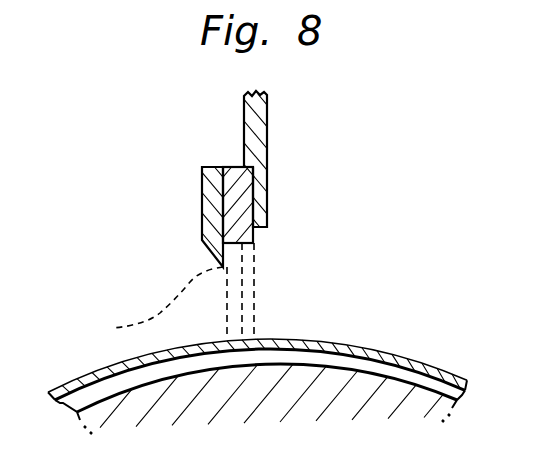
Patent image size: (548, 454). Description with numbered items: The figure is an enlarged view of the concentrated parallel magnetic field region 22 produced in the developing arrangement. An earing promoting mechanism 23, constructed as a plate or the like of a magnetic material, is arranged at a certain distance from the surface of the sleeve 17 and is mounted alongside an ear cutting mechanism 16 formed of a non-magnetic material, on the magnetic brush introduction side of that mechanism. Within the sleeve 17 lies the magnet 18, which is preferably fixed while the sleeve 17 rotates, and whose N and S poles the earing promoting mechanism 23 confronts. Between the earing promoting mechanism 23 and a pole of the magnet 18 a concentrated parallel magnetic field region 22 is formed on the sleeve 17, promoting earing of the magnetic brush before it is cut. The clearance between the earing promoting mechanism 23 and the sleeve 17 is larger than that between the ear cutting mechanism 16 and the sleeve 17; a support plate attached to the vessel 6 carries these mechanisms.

The vessel 6 is at (268, 117).
The ear cutting mechanism 16 is at (202, 176).
The sleeve 17 is at (343, 351).
The magnet 18 is at (390, 364).
The concentrated parallel magnetic field region 22 is at (240, 290).
The earing promoting mechanism 23 is at (231, 176).